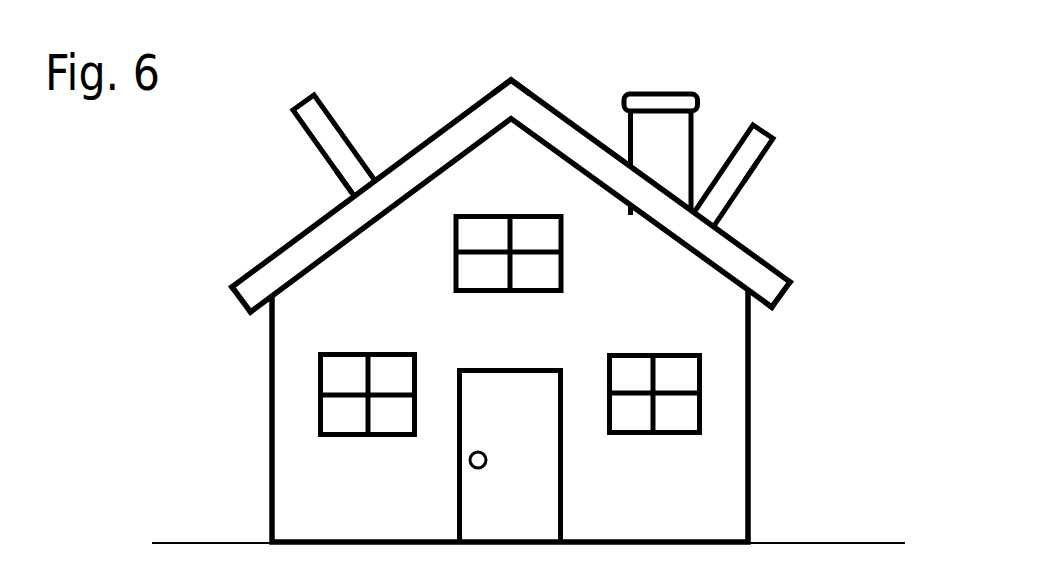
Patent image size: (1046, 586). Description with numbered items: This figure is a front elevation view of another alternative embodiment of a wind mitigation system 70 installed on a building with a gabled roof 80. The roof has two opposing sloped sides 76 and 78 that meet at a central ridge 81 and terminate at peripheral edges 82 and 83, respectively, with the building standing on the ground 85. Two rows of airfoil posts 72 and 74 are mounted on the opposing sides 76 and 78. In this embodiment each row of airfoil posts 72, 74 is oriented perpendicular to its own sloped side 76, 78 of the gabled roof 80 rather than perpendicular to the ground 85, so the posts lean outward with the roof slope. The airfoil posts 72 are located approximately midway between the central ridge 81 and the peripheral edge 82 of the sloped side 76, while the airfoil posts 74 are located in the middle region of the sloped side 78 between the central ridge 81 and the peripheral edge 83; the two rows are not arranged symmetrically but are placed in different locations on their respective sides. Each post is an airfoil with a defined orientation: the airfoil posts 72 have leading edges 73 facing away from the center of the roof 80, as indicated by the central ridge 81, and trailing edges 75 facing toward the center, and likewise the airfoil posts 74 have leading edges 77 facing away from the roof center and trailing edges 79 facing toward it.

The wind mitigation system 70 is at (112, 460).
The airfoil posts 72 is at (256, 141).
The leading edges 73 is at (333, 173).
The airfoil posts 74 is at (819, 140).
The trailing edges 75 is at (337, 123).
The sloped side 76 is at (438, 135).
The leading edges 77 is at (755, 172).
The sloped side 78 is at (547, 106).
The trailing edges 79 is at (732, 150).
The gabled roof 80 is at (438, 81).
The central ridge 81 is at (508, 77).
The peripheral edge 82 is at (232, 288).
The peripheral edge 83 is at (788, 287).
The ground 85 is at (223, 540).